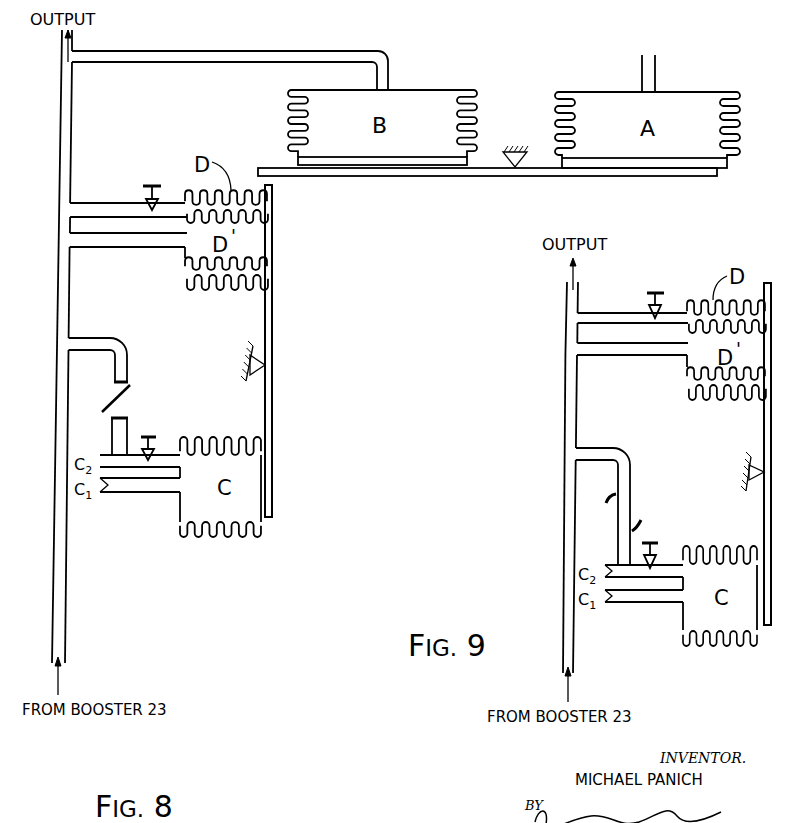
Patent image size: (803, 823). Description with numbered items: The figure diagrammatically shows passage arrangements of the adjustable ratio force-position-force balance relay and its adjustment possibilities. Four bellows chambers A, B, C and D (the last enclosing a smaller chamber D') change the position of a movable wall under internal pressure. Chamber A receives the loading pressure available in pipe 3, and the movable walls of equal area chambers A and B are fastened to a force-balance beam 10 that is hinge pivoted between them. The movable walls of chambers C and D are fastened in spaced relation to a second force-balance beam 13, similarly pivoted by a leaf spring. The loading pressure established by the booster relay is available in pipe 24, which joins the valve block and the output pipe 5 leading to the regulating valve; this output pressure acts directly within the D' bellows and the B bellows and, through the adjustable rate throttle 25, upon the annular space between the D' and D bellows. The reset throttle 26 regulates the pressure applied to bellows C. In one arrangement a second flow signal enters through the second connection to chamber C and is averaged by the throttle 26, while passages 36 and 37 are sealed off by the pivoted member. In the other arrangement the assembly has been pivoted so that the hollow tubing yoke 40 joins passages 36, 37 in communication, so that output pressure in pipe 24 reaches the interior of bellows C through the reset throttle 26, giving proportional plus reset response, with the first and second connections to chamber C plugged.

In FIG. 8, the pipe 3 is at (657, 64).
In FIG. 8, the output pipe 5 is at (78, 39).
In FIG. 9, the output pipe 5 is at (580, 299).
In FIG. 8, the force-balance beam 10 is at (488, 168).
In FIG. 8, the force-balance beam 13 is at (272, 327).
In FIG. 9, the force-balance beam 13 is at (764, 421).
In FIG. 8, the pipe 24 is at (66, 603).
In FIG. 9, the pipe 24 is at (574, 650).
In FIG. 8, the rate throttle 25 is at (150, 186).
In FIG. 9, the rate throttle 25 is at (657, 293).
In FIG. 8, the reset throttle 26 is at (153, 437).
In FIG. 9, the reset throttle 26 is at (653, 543).
In FIG. 8, the passage 36 is at (122, 352).
In FIG. 9, the passage 36 is at (618, 452).
In FIG. 8, the passage 37 is at (112, 440).
In FIG. 9, the passage 37 is at (614, 548).
In FIG. 8, the hollow tubing yoke 40 is at (136, 398).
In FIG. 9, the hollow tubing yoke 40 is at (633, 503).